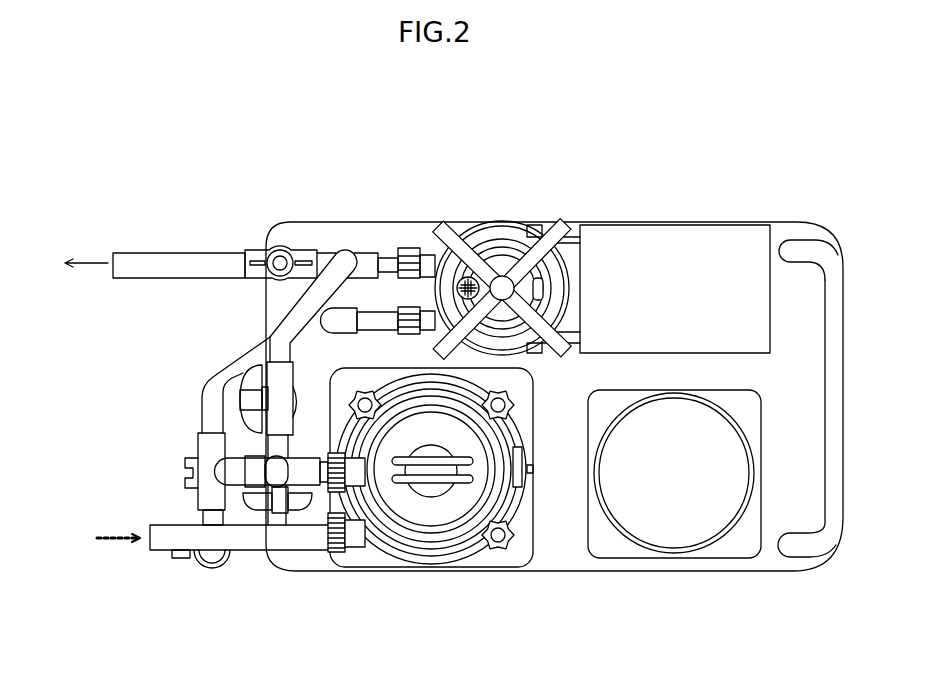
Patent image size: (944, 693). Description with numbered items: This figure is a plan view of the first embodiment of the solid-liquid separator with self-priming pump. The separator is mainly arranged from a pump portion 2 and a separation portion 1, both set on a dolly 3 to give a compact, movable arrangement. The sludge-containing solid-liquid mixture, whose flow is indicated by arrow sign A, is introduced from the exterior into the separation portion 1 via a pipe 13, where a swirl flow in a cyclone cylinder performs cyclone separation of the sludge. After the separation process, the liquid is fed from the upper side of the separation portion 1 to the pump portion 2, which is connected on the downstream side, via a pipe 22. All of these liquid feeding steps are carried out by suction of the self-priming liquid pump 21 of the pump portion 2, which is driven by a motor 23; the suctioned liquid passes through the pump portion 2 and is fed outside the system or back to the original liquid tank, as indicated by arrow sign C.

The separation portion 1 is at (506, 575).
The pump portion 2 is at (577, 188).
The dolly 3 is at (782, 562).
The pipe 13 is at (262, 537).
The self-priming liquid pump 21 is at (503, 246).
The pipe 22 is at (280, 333).
The motor 23 is at (656, 248).